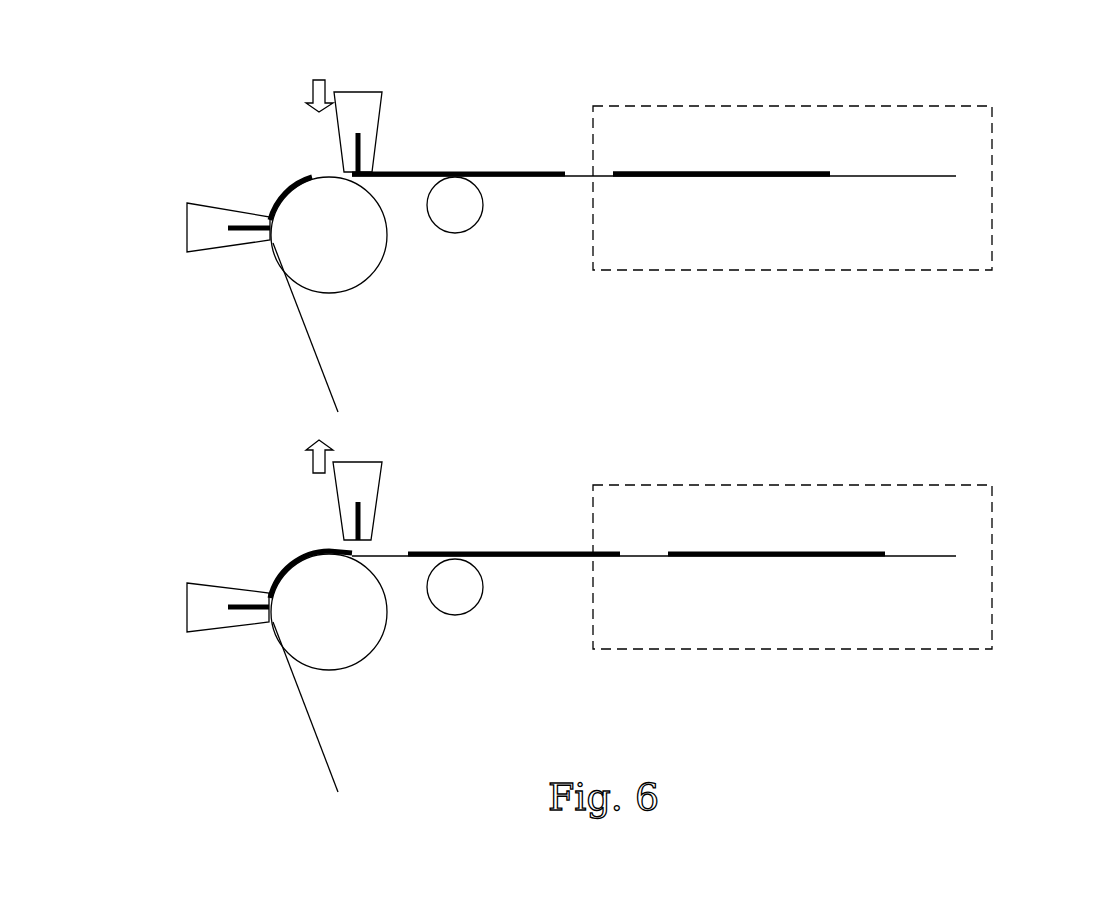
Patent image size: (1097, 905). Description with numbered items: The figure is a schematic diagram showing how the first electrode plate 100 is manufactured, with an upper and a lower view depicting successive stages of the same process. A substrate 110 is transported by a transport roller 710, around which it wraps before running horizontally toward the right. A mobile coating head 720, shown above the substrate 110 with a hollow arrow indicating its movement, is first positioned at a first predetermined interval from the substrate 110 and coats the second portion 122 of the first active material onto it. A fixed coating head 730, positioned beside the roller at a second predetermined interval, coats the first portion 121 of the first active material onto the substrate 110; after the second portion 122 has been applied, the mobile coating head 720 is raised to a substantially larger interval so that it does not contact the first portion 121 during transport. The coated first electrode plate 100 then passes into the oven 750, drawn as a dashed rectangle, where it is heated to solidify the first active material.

The first electrode plate 100 is at (895, 168).
The substrate 110 is at (313, 353).
The first portion of the first active material 121 is at (288, 572).
The second portion of the first active material 122 is at (525, 173).
The transport roller 710 is at (345, 258).
The mobile coating head 720 is at (380, 112).
The fixed coating head 730 is at (197, 230).
The oven 750 is at (970, 230).